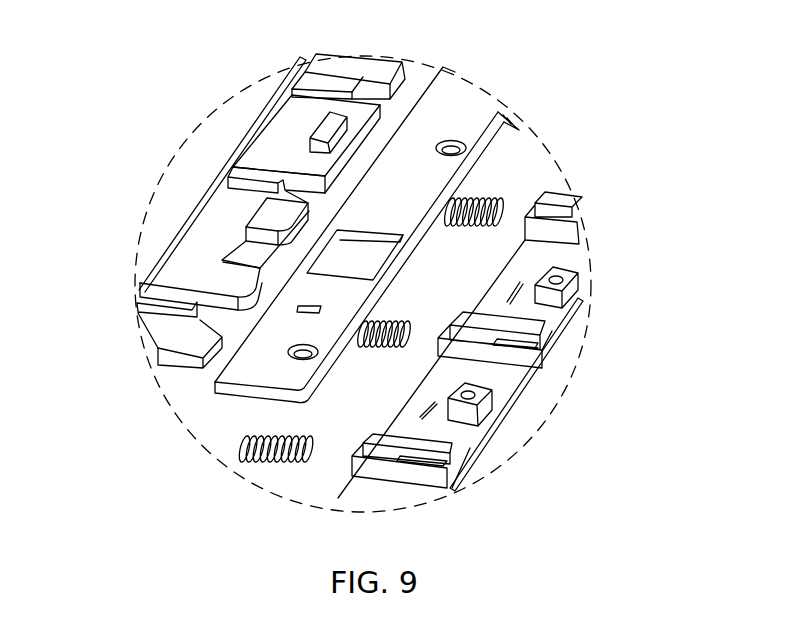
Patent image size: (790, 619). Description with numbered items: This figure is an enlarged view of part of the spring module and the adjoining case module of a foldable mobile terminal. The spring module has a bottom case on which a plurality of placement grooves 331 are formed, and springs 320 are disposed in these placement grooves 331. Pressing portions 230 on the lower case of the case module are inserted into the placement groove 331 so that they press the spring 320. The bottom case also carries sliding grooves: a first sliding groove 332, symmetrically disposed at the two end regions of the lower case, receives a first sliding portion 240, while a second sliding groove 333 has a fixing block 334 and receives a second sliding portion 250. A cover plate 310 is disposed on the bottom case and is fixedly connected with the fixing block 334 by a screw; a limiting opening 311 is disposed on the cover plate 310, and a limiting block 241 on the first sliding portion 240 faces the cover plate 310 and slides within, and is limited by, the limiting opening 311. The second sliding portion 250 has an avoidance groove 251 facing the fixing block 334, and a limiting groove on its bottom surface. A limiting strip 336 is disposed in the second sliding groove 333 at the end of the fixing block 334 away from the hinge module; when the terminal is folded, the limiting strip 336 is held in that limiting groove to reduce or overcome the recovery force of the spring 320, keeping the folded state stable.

The pressing portion 230 is at (168, 293).
The first sliding portion 240 is at (288, 140).
The limiting block 241 is at (302, 116).
The second sliding portion 250 is at (202, 258).
The avoidance groove 251 is at (256, 247).
The cover plate 310 is at (463, 115).
The limiting opening 311 is at (360, 258).
The spring 320 is at (275, 455).
The placement groove 331 is at (498, 327).
The first sliding groove 332 is at (399, 483).
The second sliding groove 333 is at (533, 262).
The fixing block 334 is at (492, 403).
The limiting strip 336 is at (440, 427).